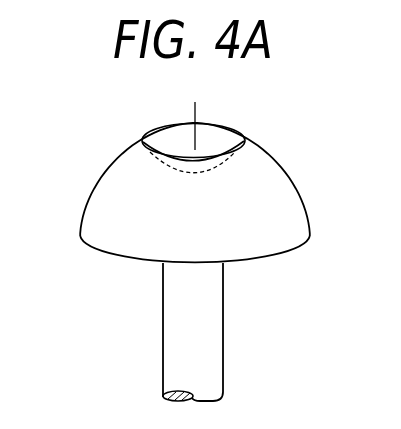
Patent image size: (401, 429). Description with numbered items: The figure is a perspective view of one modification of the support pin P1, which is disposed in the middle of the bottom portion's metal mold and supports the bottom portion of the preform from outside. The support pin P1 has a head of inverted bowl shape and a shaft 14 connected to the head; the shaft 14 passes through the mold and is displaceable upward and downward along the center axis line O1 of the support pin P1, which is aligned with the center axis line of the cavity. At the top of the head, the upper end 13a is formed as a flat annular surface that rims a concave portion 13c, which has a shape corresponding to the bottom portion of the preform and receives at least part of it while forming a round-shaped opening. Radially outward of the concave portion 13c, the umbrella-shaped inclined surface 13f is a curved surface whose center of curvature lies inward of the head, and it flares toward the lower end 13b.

The upper end 13a is at (230, 127).
The lower end 13b is at (262, 258).
The concave portion 13c is at (182, 139).
The inclined surface 13f is at (272, 207).
The shaft 14 is at (203, 355).
The center axis line O1 is at (196, 111).
The support pin P1 is at (95, 288).